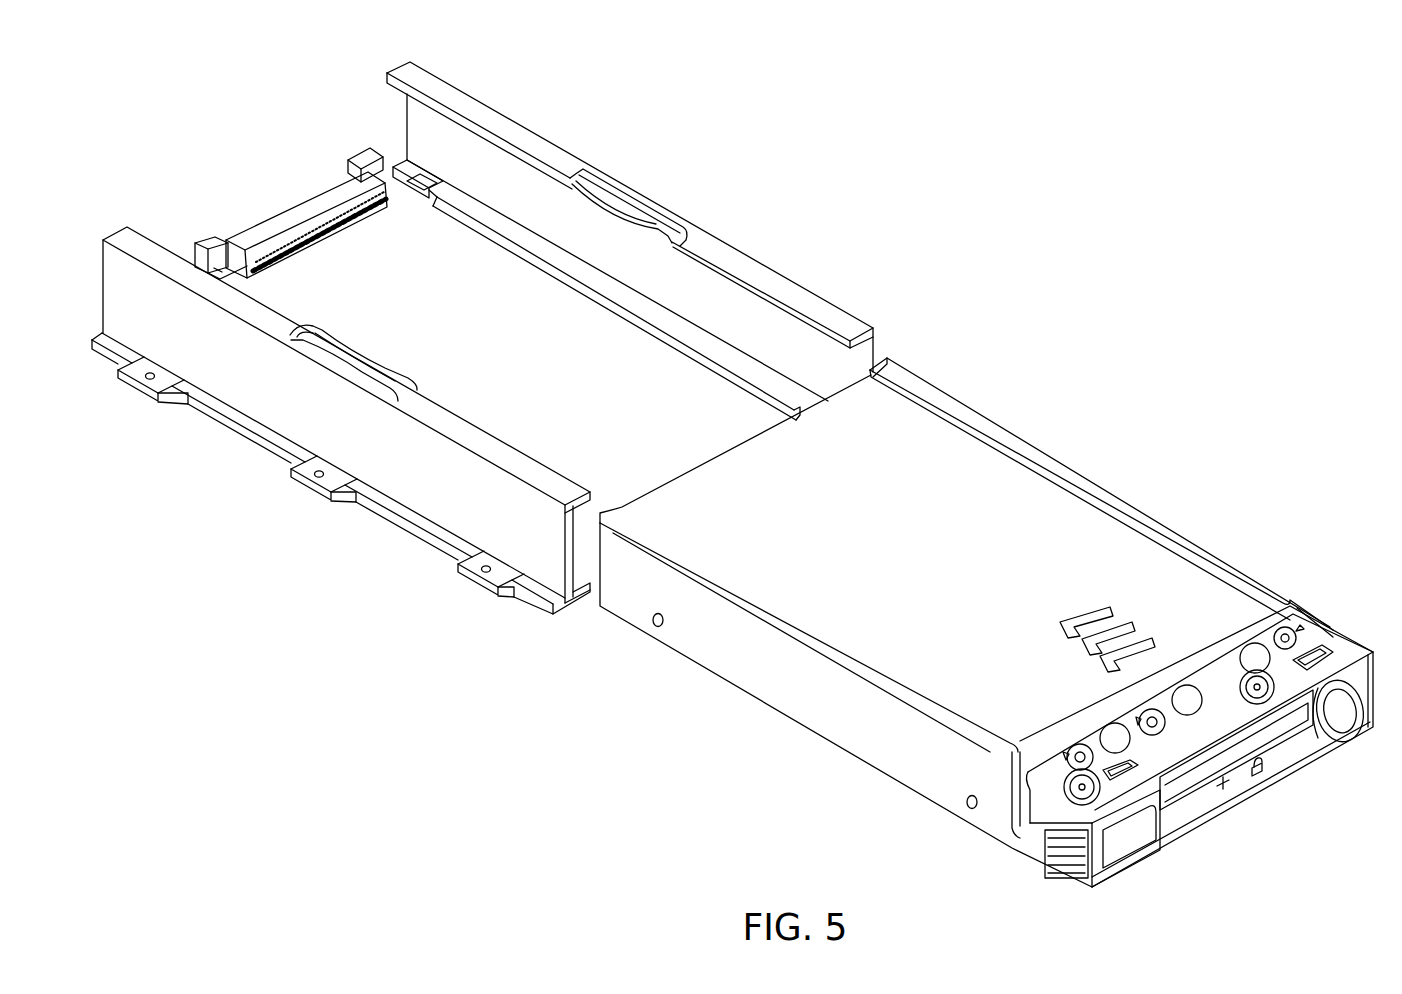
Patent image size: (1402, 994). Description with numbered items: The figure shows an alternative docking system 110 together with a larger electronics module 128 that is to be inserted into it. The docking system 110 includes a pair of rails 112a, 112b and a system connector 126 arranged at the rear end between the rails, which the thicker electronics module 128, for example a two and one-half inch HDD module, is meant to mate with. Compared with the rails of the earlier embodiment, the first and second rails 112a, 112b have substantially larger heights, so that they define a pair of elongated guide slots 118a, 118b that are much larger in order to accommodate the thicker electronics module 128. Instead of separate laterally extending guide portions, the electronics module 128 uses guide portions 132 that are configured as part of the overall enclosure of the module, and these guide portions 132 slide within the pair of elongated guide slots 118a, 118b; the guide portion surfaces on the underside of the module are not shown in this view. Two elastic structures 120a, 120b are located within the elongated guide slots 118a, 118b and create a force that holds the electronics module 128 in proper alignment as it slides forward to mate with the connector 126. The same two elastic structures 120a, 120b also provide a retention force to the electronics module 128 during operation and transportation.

The docking system 110 is at (228, 80).
The first rail 112a is at (771, 275).
The second rail 112b is at (424, 494).
The first elongated guide slot 118a is at (505, 233).
The second elongated guide slot 118b is at (580, 572).
The first elastic structure 120a is at (638, 205).
The second elastic structure 120b is at (399, 360).
The system connector 126 is at (261, 214).
The electronics module 128 is at (1117, 547).
The guide portions 132 is at (994, 430).